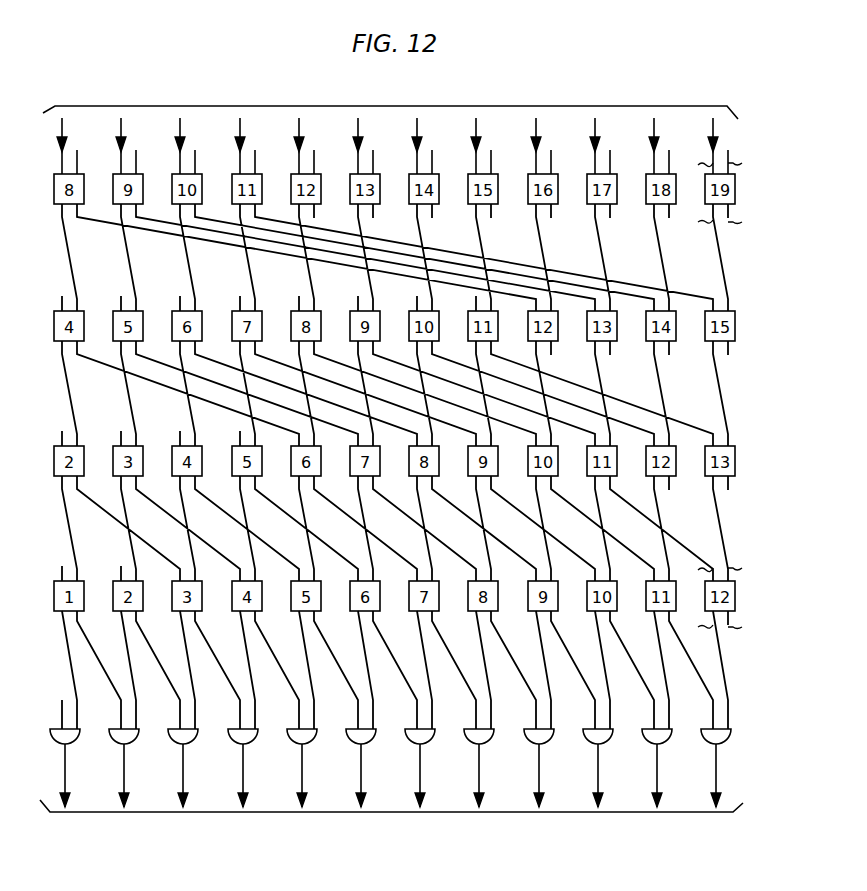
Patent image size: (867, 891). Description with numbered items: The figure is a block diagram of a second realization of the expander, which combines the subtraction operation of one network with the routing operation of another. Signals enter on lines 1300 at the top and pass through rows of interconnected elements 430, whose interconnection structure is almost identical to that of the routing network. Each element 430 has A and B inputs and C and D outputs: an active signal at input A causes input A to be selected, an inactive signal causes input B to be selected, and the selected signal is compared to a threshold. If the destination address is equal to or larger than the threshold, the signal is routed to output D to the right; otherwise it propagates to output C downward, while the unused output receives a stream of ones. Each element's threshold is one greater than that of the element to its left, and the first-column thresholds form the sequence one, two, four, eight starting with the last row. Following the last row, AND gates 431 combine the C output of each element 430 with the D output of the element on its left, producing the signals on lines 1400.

The element 430 is at (751, 597).
The AND gate 431 is at (741, 748).
The input lines 1300 is at (390, 128).
The output lines 1400 is at (391, 793).